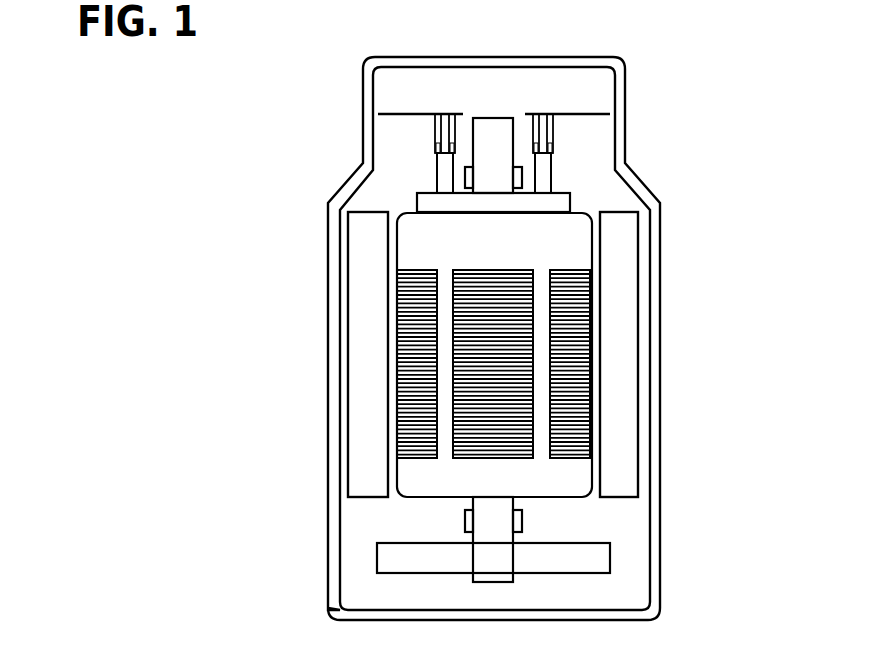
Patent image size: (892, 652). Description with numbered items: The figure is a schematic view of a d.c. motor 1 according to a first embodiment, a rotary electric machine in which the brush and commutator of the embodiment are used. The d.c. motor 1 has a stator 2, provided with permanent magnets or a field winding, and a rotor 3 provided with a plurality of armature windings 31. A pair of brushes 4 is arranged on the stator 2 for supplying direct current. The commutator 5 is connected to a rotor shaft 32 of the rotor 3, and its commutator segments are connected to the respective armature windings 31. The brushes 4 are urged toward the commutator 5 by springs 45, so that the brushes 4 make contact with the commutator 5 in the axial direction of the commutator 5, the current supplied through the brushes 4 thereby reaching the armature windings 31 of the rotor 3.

The d.c. motor 1 is at (659, 42).
The stator 2 is at (615, 332).
The rotor 3 is at (545, 243).
The armature windings 31 is at (507, 424).
The rotor shaft 32 is at (492, 553).
The brush 4 is at (437, 178).
The spring 45 is at (435, 133).
The commutator 5 is at (555, 203).